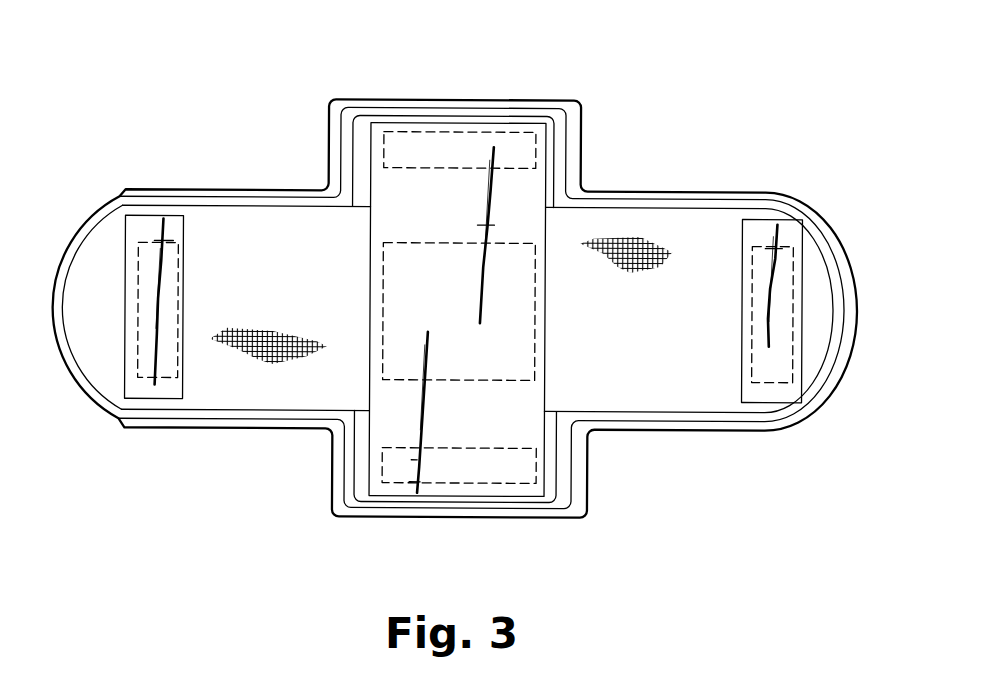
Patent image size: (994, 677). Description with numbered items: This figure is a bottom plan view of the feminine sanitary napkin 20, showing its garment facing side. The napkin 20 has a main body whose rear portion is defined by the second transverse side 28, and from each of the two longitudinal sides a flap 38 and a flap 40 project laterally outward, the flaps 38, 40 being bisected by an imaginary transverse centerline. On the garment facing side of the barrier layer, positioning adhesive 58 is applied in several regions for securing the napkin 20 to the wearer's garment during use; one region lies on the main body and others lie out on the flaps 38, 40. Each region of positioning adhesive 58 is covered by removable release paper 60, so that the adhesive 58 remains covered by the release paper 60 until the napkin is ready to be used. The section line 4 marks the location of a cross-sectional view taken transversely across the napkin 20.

The sanitary napkin 20 is at (176, 82).
The second transverse side 28 is at (99, 212).
The flap 38 is at (590, 519).
The flap 40 is at (596, 92).
The positioning adhesive 58 is at (413, 142).
The removable release paper 60 is at (173, 362).
The section line 4- 4 is at (44, 310).